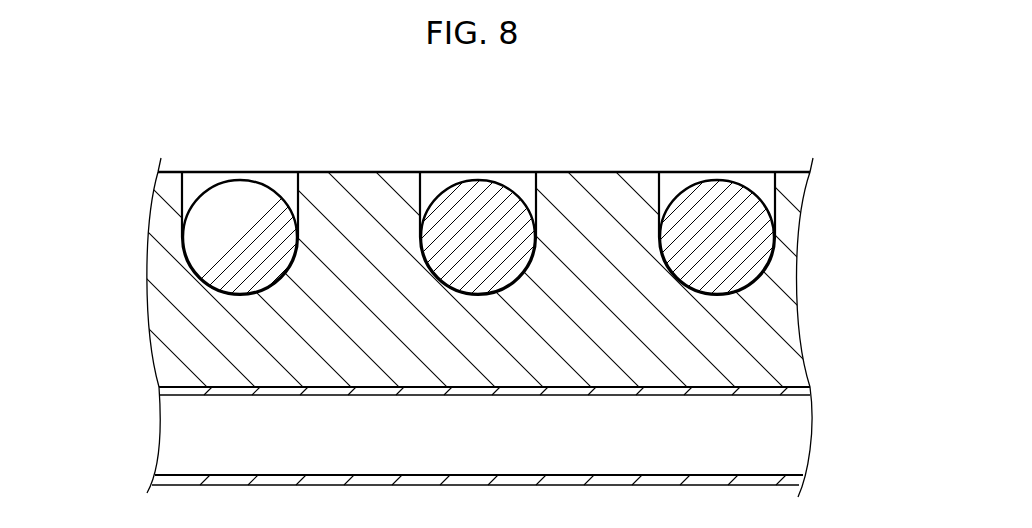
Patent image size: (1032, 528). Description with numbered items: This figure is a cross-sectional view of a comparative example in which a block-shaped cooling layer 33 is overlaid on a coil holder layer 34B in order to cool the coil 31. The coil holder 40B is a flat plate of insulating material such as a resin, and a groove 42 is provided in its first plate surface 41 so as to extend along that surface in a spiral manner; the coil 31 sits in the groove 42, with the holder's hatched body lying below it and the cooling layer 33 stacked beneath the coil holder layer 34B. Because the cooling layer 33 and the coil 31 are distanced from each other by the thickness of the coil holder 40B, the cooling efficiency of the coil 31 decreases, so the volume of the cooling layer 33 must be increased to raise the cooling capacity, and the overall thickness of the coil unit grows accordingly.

The coil 31 is at (235, 215).
The cooling layer 33 is at (823, 389).
The coil holder layer 34B is at (516, 249).
The coil holder 40B is at (160, 303).
The first plate surface 41 is at (600, 170).
The groove 42 is at (284, 182).